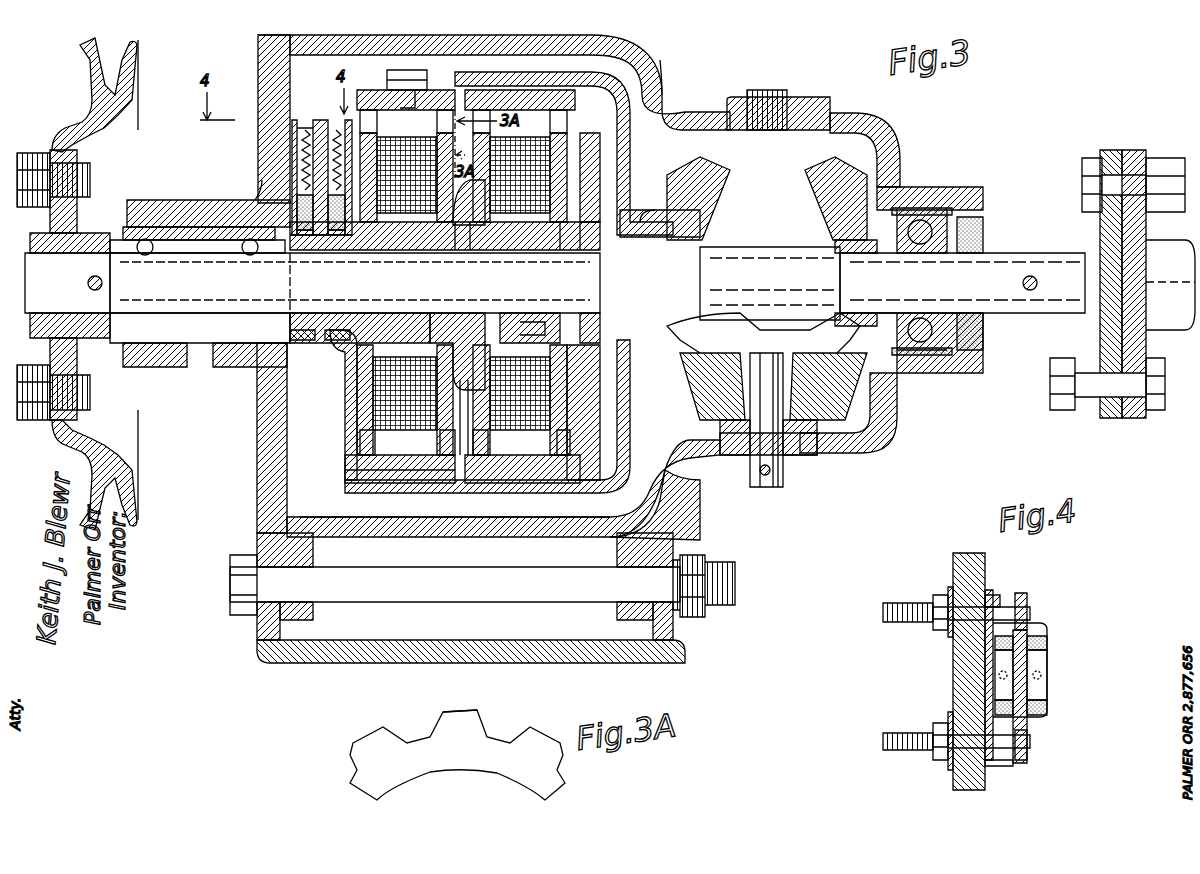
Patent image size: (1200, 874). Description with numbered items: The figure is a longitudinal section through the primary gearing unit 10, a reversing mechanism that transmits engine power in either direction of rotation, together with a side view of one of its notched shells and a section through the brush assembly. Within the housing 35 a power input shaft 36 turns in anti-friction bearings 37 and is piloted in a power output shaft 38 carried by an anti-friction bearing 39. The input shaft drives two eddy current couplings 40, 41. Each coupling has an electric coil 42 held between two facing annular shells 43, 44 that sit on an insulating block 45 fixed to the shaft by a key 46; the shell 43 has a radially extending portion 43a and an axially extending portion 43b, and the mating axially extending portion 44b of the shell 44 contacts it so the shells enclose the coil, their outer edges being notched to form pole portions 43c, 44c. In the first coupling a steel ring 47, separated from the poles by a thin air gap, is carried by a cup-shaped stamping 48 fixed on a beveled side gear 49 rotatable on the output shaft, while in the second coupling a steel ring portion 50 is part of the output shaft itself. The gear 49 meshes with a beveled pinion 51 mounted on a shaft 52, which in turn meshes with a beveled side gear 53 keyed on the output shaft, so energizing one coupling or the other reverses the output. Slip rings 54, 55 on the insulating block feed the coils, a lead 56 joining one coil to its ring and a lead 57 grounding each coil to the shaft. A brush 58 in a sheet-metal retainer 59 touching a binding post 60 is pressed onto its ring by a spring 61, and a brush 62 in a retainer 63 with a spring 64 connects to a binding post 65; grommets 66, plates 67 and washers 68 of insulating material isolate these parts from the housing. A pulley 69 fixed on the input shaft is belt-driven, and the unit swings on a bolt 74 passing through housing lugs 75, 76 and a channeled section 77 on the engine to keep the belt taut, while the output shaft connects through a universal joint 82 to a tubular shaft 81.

In FIG. 3, the primary gearing unit 10 is at (668, 78).
In FIG. 3, the housing 35 is at (652, 66).
In FIG. 4, the housing 35 is at (955, 567).
In FIG. 3, the power input shaft 36 is at (90, 258).
In FIG. 3, the anti-friction bearings 37 is at (250, 250).
In FIG. 3, the power output shaft 38 is at (1005, 255).
In FIG. 3, the anti-friction bearing 39 is at (922, 210).
In FIG. 3, the eddy current coupling 40 is at (397, 518).
In FIG. 3, the eddy current coupling 41 is at (534, 508).
In FIG. 3, the electric coil 42 is at (420, 168).
In FIG. 3, the annular shell 43 is at (356, 398).
In FIG. 3, the radially extending portion 43a is at (358, 428).
In FIG. 3, the axially extending portion 43b is at (403, 250).
In FIG. 3, the pole portions 43c is at (372, 108).
In FIG. 3, the annular shell 44 is at (580, 409).
In FIG. 3A, the annular shell 44 is at (463, 767).
In FIG. 3, the axially extending portion 44b is at (455, 310).
In FIG. 3, the pole portions 44c is at (478, 108).
In FIG. 3A, the pole portions 44c is at (445, 714).
In FIG. 3, the insulating block 45 is at (522, 248).
In FIG. 3, the key 46 is at (475, 245).
In FIG. 3, the steel ring 47 is at (356, 470).
In FIG. 3, the cup-shaped stamping 48 is at (631, 138).
In FIG. 3, the beveled side gear 49 is at (706, 166).
In FIG. 3, the steel ring portion 50 is at (523, 86).
In FIG. 3, the beveled pinion 51 is at (822, 422).
In FIG. 3, the shaft 52 is at (772, 487).
In FIG. 3, the beveled side gear 53 is at (837, 170).
In FIG. 3, the slip ring 54 is at (300, 338).
In FIG. 3, the slip ring 55 is at (343, 345).
In FIG. 3, the lead 56 is at (330, 312).
In FIG. 3, the lead 57 is at (530, 312).
In FIG. 3, the electrical brush 58 is at (262, 205).
In FIG. 4, the electrical brush 58 is at (960, 706).
In FIG. 4, the brush retainer 59 is at (995, 765).
In FIG. 4, the binding post 60 is at (910, 752).
In FIG. 3, the spring 61 is at (305, 125).
In FIG. 4, the spring 61 is at (980, 674).
In FIG. 3, the brush 62 is at (333, 240).
In FIG. 4, the brush 62 is at (1048, 710).
In FIG. 3, the brush retainer 63 is at (355, 225).
In FIG. 4, the brush retainer 63 is at (1032, 634).
In FIG. 3, the spring 64 is at (337, 125).
In FIG. 4, the spring 64 is at (1048, 670).
In FIG. 4, the binding post 65 is at (900, 606).
In FIG. 4, the grommets 66 is at (946, 640).
In FIG. 4, the plates 67 is at (991, 594).
In FIG. 4, the washers 68 is at (1027, 600).
In FIG. 3, the pulley 69 is at (140, 495).
In FIG. 3, the bolt 74 is at (728, 583).
In FIG. 3, the lug 75 is at (617, 618).
In FIG. 3, the lug 76 is at (312, 618).
In FIG. 3, the channeled section 77 is at (488, 655).
In FIG. 3, the tubular shaft 81 is at (1180, 322).
In FIG. 3, the universal joint 82 is at (1118, 152).